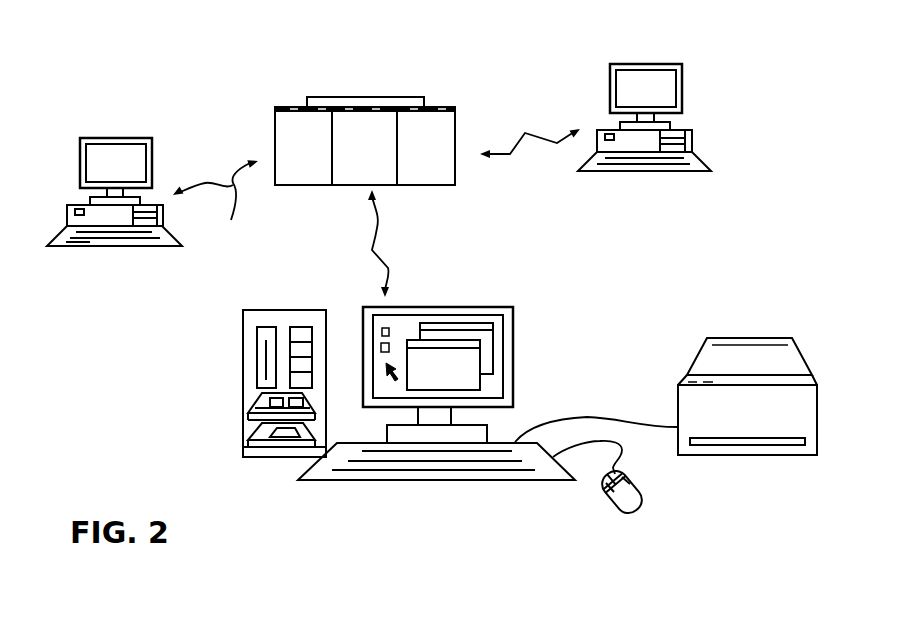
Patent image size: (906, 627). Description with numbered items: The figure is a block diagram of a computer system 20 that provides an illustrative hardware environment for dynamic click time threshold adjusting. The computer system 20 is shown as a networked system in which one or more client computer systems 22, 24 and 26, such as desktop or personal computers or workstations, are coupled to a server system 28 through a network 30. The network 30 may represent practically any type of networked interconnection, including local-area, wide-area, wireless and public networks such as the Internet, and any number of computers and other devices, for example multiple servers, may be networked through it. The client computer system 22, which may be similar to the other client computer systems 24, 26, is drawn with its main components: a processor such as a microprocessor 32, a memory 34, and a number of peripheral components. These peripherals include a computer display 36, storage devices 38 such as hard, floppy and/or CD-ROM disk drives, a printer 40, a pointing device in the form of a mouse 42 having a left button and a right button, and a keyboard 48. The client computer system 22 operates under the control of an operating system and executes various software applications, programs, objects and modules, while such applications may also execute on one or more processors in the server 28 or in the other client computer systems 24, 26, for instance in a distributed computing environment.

The computer system 20 is at (152, 318).
The client computer system 22 is at (289, 303).
The client computer system 24 is at (79, 171).
The client computer system 26 is at (610, 79).
The server system 28 is at (275, 130).
The network 30 is at (523, 132).
The microprocessor 32 is at (250, 444).
The memory 34 is at (250, 409).
The computer display 36 is at (513, 364).
The storage devices 38 is at (257, 362).
The printer 40 is at (678, 398).
The mouse 42 is at (646, 514).
The keyboard 48 is at (425, 482).